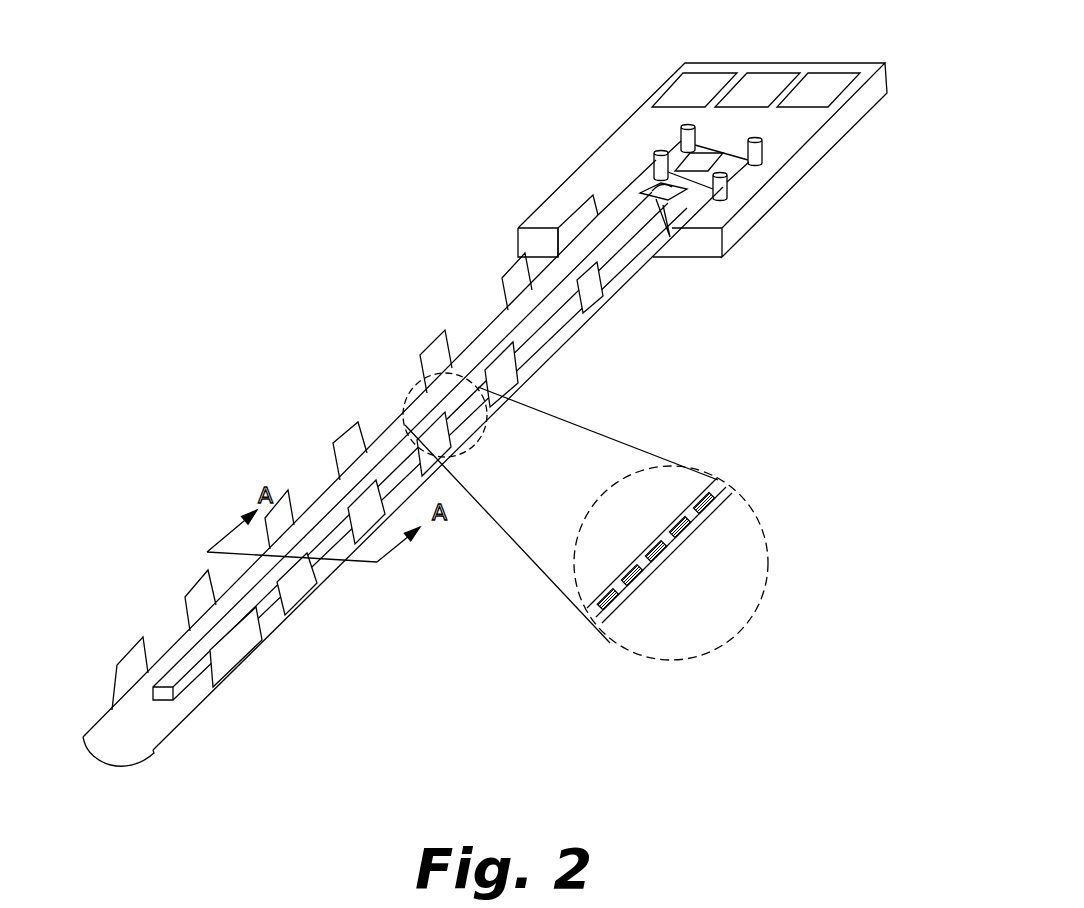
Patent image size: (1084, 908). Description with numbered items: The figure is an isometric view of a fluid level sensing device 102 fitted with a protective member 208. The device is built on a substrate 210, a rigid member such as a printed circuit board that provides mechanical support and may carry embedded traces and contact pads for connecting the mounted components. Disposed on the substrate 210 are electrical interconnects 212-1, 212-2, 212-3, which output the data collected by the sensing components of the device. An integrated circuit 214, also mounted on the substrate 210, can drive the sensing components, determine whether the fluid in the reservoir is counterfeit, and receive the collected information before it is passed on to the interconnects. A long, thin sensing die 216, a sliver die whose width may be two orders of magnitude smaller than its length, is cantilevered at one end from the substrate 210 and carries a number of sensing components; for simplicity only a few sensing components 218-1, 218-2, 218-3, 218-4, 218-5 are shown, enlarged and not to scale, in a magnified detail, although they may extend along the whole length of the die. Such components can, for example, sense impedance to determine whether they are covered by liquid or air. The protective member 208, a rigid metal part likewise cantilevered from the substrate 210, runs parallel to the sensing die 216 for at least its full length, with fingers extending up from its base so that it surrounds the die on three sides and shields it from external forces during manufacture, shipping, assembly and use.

The fluid level sensing device 102 is at (285, 101).
The protective member 208 is at (382, 453).
The substrate 210 is at (635, 138).
The electrical interconnect 212-1 is at (688, 89).
The electrical interconnect 212-2 is at (755, 93).
The electrical interconnect 212-3 is at (822, 94).
The integrated circuit 214 is at (707, 161).
The sensing die 216 is at (200, 642).
The sensing component 218-1 is at (707, 504).
The sensing component 218-2 is at (683, 530).
The sensing component 218-3 is at (660, 555).
The sensing component 218-4 is at (635, 577).
The sensing component 218-5 is at (611, 601).